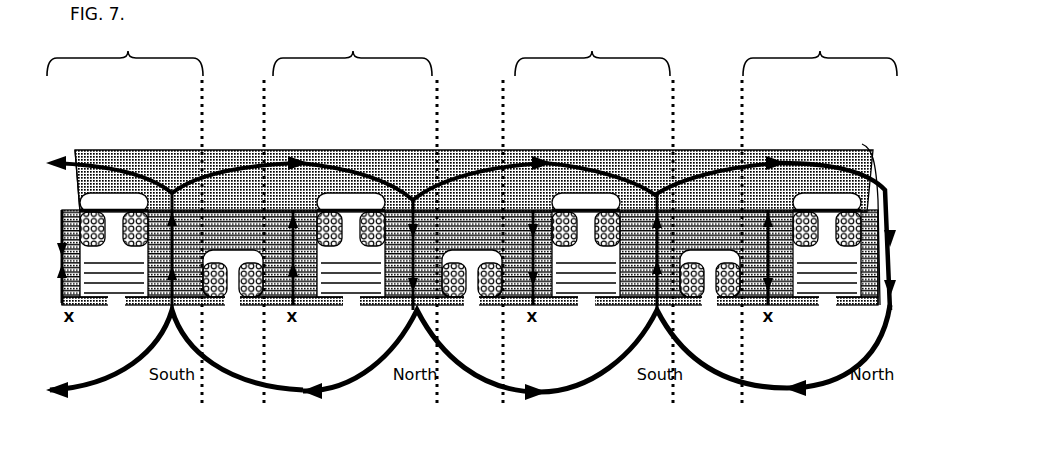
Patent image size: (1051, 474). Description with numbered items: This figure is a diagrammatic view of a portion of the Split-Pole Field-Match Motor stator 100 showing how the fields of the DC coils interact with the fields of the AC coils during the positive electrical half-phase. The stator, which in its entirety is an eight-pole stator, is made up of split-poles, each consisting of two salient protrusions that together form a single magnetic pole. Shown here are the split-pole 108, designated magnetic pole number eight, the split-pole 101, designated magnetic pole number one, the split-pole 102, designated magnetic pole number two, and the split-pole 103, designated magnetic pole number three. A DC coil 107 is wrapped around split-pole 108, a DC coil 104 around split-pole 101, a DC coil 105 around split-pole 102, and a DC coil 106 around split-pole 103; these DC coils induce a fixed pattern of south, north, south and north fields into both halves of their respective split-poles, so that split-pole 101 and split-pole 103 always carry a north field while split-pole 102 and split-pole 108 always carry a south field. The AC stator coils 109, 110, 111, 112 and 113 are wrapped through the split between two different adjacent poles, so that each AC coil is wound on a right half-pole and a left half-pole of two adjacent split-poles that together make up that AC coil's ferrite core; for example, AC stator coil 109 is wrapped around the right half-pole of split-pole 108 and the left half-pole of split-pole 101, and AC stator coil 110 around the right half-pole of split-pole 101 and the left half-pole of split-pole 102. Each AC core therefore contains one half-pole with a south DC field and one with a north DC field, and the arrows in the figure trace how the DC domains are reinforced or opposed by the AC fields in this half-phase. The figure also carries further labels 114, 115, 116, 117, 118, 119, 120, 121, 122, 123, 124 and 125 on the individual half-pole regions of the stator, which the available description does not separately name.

The Split-Pole Field-Match Motor stator 100 is at (172, 152).
The split-pole 101 is at (352, 54).
The split-pole 102 is at (592, 54).
The split-pole 103 is at (820, 54).
The DC coil 104 is at (347, 278).
The DC coil 105 is at (580, 275).
The DC coil 106 is at (825, 278).
The DC coil 107 is at (112, 278).
The split-pole 108 is at (125, 54).
The AC stator coil 109 is at (227, 223).
The AC stator coil 110 is at (460, 220).
The AC stator coil 111 is at (713, 223).
The AC stator coil 112 is at (862, 214).
The AC stator coil 113 is at (73, 155).
The lower pole tooth 114 is at (158, 306).
The lower pole tooth 115 is at (296, 292).
The lower pole tooth 116 is at (400, 292).
The lower pole tooth 117 is at (544, 292).
The lower pole tooth 118 is at (637, 298).
The lower pole tooth 119 is at (780, 292).
The upper pole tooth 120 is at (140, 160).
The upper pole tooth 121 is at (288, 212).
The upper pole tooth 122 is at (413, 198).
The upper pole tooth 123 is at (533, 205).
The upper pole tooth 124 is at (655, 203).
The upper pole tooth 125 is at (766, 215).